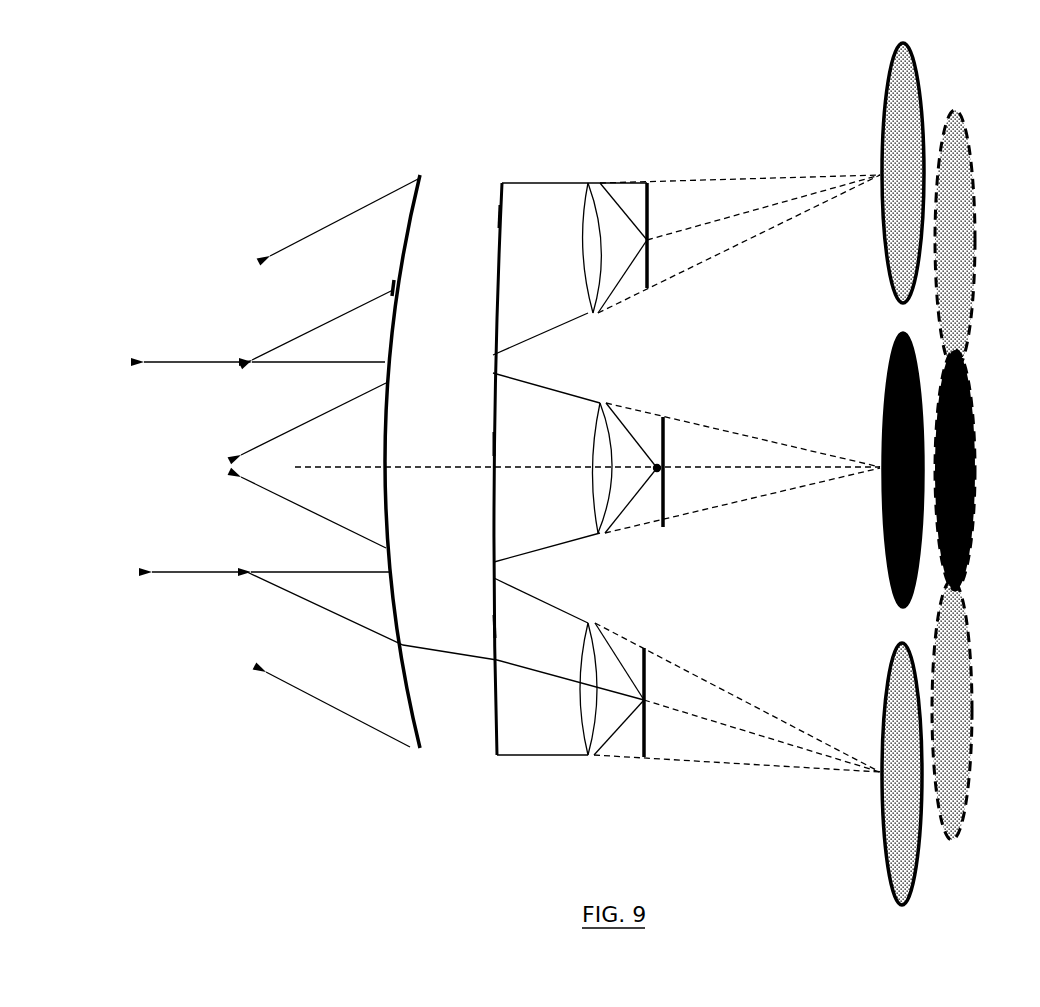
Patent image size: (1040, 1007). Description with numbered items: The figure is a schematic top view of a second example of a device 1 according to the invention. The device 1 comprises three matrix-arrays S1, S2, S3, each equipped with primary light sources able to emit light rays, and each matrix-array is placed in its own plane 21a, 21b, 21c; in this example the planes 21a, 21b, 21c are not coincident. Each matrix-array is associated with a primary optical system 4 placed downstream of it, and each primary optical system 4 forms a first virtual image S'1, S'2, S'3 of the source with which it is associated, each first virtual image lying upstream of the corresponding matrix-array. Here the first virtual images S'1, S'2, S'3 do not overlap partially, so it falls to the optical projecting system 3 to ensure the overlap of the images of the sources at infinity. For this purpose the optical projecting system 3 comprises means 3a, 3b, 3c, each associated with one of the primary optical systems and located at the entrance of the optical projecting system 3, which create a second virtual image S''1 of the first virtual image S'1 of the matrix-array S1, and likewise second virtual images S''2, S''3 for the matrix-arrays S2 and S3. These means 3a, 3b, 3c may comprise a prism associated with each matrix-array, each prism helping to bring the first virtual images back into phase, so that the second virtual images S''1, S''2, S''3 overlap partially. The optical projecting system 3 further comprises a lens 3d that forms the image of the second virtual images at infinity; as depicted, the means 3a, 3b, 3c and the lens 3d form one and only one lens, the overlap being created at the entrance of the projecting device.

The device 1 is at (262, 156).
The optical projecting system 3 is at (419, 176).
The means creating second virtual image 3a is at (498, 216).
The means creating second virtual image 3b is at (492, 444).
The means creating second virtual image 3c is at (494, 626).
The lens 3d is at (394, 280).
The primary optical system 4 is at (562, 184).
The plane 21a is at (640, 182).
The plane 21b is at (667, 423).
The plane 21c is at (650, 680).
The matrix-array S1 is at (672, 235).
The matrix-array S2 is at (681, 472).
The matrix-array S3 is at (662, 733).
The first virtual image S'1 is at (885, 173).
The first virtual image S'2 is at (875, 470).
The first virtual image S'3 is at (876, 774).
The second virtual image S''1 is at (983, 240).
The second virtual image S''2 is at (981, 470).
The second virtual image S''3 is at (974, 710).